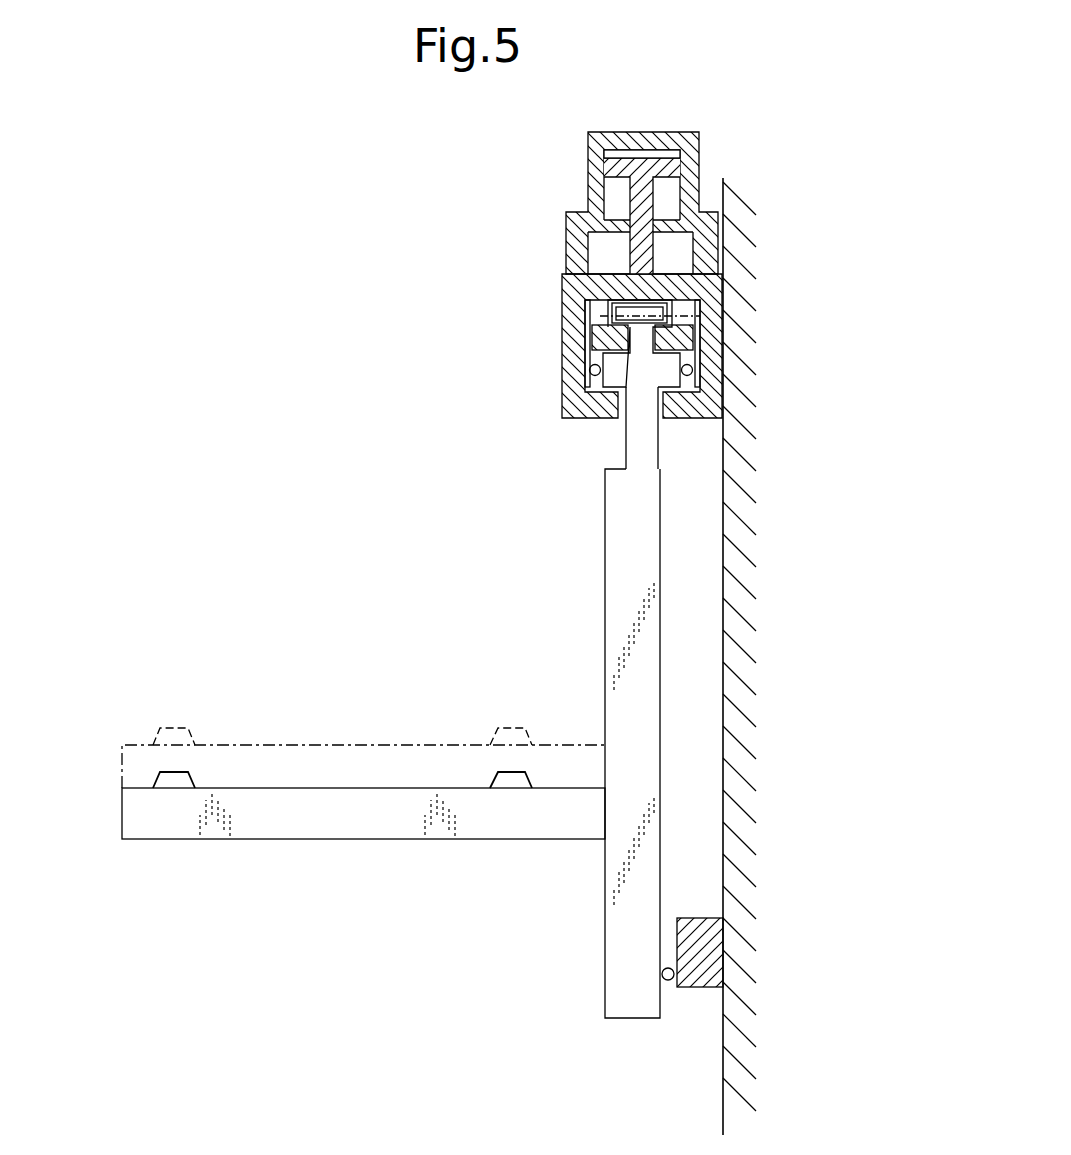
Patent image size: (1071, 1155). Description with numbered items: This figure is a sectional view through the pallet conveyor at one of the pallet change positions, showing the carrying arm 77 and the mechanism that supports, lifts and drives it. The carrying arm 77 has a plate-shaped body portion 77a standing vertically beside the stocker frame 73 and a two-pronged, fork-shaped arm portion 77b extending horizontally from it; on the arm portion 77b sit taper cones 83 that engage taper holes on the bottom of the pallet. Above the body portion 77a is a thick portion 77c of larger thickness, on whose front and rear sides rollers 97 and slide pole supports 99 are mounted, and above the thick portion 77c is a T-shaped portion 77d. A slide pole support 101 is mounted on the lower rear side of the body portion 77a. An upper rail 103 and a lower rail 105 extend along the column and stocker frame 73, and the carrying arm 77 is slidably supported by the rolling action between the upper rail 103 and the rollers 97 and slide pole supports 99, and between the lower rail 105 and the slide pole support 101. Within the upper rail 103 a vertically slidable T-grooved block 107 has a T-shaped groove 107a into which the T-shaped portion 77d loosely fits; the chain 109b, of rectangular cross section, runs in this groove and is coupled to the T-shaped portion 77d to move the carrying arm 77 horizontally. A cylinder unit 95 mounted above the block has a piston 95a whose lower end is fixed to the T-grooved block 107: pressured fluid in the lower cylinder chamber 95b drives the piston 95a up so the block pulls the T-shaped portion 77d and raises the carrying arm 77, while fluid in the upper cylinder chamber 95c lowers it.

The stocker frame 73 is at (735, 1072).
The carrying arm 77 is at (442, 696).
The body portion 77a is at (640, 607).
The arm portion 77b is at (272, 825).
The thick portion 77c is at (624, 375).
The T-shaped portion 77d is at (662, 343).
The taper cones 83 is at (165, 780).
The cylinder unit 95 is at (654, 172).
The piston 95a is at (700, 170).
The lower cylinder chamber 95b is at (615, 198).
The upper cylinder chamber 95c is at (608, 153).
The rollers 97 is at (578, 412).
The slide pole supports 99 is at (592, 372).
The slide pole support 101 is at (668, 980).
The upper rail 103 is at (587, 325).
The lower rail 105 is at (715, 930).
The T-grooved block 107 is at (647, 337).
The T-shaped groove 107a is at (565, 285).
The chain 109b is at (700, 320).